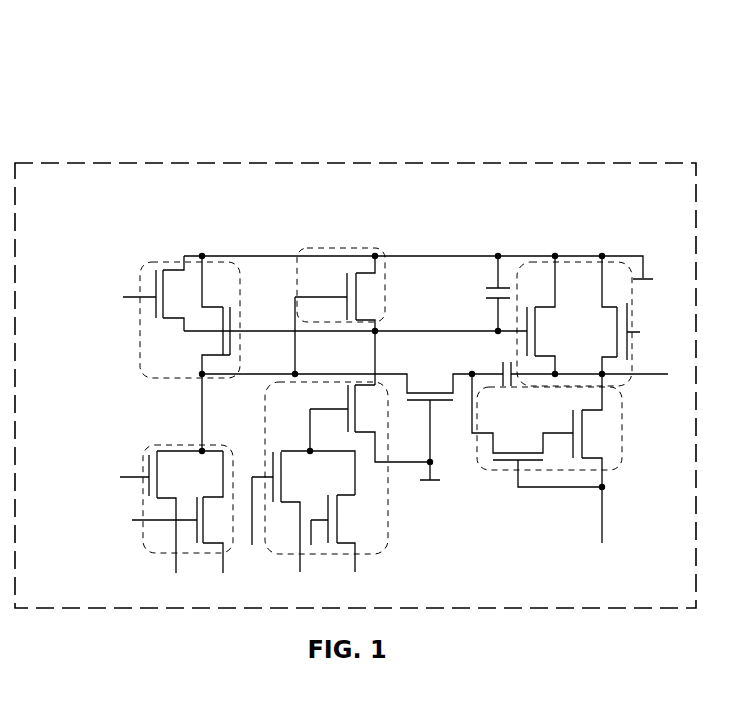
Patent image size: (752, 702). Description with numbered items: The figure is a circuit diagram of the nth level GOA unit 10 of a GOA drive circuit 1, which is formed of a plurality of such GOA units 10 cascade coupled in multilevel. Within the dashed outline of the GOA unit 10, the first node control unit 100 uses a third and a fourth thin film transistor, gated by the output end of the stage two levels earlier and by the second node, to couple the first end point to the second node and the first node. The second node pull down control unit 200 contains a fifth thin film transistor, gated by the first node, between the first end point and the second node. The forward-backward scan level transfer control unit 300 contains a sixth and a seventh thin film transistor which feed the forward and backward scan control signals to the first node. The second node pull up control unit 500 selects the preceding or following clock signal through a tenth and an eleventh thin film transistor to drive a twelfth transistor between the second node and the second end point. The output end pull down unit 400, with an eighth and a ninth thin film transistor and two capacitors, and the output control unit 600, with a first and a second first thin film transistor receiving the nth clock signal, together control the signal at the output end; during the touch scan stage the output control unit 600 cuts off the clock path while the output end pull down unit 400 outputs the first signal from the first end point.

The GOA drive circuit 1 is at (377, 53).
The GOA unit 10 is at (467, 163).
The first node control unit 100 is at (187, 253).
The second node pull down control unit 200 is at (303, 247).
The forward-backward scan level transfer control unit 300 is at (147, 497).
The output end pull down unit 400 is at (576, 253).
The second node pull up control unit 500 is at (383, 553).
The output control unit 600 is at (572, 470).